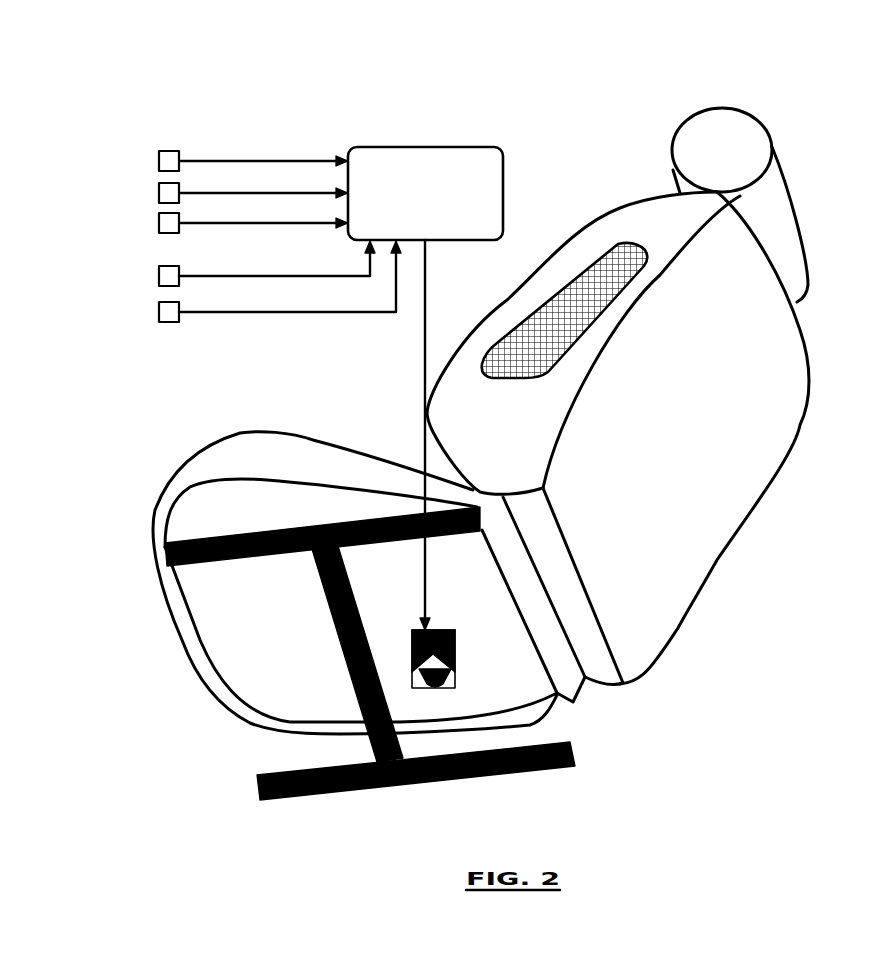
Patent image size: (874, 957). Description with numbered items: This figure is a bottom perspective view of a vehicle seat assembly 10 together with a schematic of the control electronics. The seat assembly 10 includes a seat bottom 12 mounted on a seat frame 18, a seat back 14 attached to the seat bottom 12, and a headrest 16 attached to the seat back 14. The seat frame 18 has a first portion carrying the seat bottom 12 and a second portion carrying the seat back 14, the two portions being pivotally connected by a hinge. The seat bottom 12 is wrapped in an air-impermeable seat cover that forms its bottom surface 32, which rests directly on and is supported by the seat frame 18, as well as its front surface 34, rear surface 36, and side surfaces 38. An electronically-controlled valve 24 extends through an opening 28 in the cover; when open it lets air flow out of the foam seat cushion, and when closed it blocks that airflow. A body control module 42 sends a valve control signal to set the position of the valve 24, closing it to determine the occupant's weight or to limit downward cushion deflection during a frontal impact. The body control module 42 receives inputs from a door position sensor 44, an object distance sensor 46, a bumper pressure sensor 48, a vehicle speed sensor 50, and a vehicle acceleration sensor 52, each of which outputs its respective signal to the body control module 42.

The seat assembly 10 is at (767, 86).
The seat bottom 12 is at (325, 618).
The seat back 14 is at (722, 473).
The headrest 16 is at (779, 201).
The seat frame 18 is at (495, 793).
The electronically-controlled valve 24 is at (461, 650).
The opening 28 is at (457, 676).
The bottom surface 32 is at (223, 627).
The front surface 34 is at (180, 468).
The rear surface 36 is at (587, 690).
The side surfaces 38 is at (310, 457).
The body control module 42 is at (394, 145).
The door position sensor 44 is at (158, 158).
The object distance sensor 46 is at (158, 188).
The bumper pressure sensor 48 is at (158, 218).
The vehicle speed sensor 50 is at (158, 272).
The vehicle acceleration sensor 52 is at (158, 308).